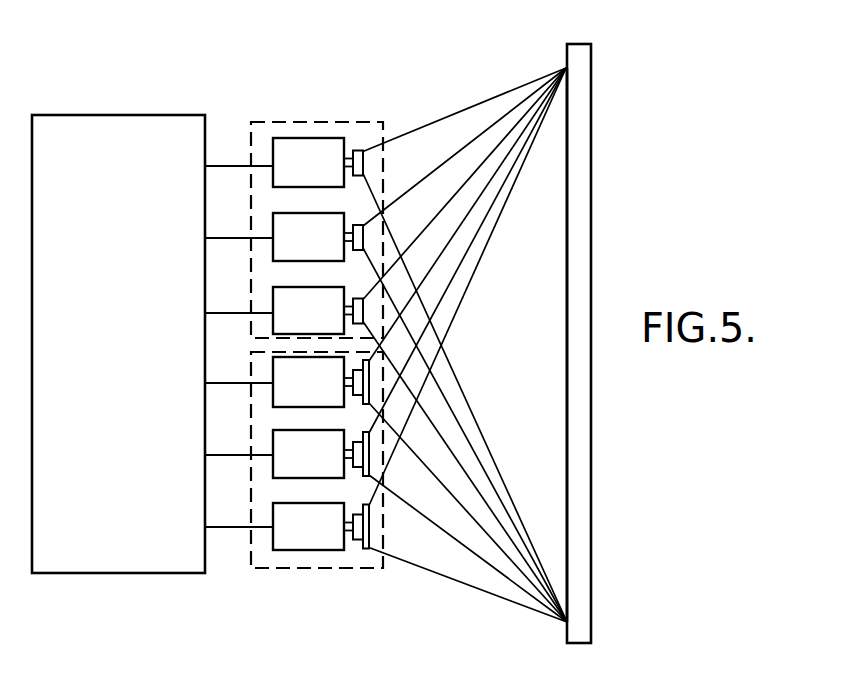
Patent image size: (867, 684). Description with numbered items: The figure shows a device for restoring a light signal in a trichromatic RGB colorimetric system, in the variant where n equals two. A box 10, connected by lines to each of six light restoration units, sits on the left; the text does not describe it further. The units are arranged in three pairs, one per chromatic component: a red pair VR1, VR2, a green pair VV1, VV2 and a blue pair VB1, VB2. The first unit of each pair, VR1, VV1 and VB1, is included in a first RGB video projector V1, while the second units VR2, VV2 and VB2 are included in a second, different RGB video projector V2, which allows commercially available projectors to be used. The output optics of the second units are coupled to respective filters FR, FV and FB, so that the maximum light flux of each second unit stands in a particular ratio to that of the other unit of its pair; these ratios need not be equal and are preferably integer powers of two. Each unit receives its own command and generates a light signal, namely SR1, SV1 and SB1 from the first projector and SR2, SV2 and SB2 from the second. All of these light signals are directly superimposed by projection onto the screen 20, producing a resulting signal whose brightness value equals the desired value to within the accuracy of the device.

The video signal source / control unit 10 is at (100, 555).
The screen 20 is at (583, 590).
The first RGB video projector V1 is at (326, 122).
The second RGB video projector V2 is at (333, 568).
The light restoration unit VR1 is at (298, 157).
The light restoration unit VV1 is at (287, 232).
The light restoration unit VB1 is at (287, 303).
The light restoration unit VR2 is at (290, 387).
The light restoration unit VV2 is at (290, 458).
The light restoration unit VB2 is at (290, 525).
The light signal SR1 is at (473, 125).
The light signal SV1 is at (398, 222).
The light signal SB1 is at (388, 317).
The light signal SR2 is at (388, 392).
The light signal SV2 is at (397, 444).
The light signal SB2 is at (463, 567).
The filter FR is at (372, 378).
The filter FV is at (372, 460).
The filter FB is at (372, 552).